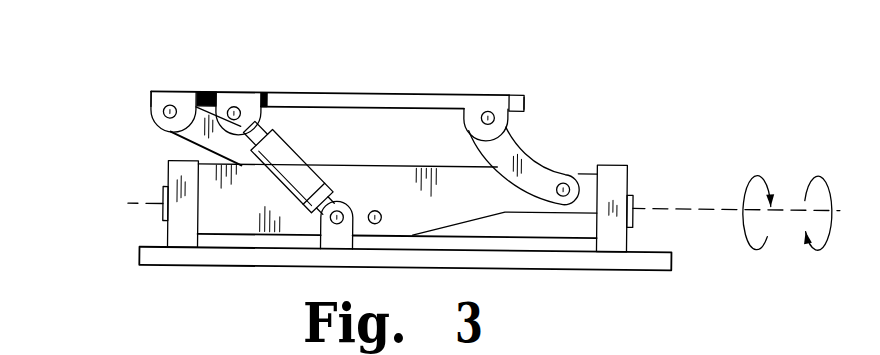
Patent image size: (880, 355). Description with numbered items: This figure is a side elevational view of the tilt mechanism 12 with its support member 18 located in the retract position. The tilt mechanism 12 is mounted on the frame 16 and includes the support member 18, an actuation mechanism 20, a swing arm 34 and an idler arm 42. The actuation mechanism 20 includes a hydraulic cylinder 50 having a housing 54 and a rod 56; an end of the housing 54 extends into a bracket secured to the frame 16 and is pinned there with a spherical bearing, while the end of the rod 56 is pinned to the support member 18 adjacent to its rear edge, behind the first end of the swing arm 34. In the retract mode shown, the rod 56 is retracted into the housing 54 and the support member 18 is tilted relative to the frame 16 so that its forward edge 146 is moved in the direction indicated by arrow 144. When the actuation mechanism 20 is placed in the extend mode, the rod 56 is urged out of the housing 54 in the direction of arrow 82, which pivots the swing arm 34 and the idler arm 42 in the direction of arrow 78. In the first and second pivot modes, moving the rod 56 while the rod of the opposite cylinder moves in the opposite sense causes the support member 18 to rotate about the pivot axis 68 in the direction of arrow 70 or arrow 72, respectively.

The tilt mechanism 12 is at (97, 105).
The frame 16 is at (614, 261).
The support member 18 is at (512, 101).
The actuation mechanism 20 is at (242, 218).
The swing arm 34 is at (532, 167).
The idler arm 42 is at (188, 138).
The hydraulic cylinder 50 is at (316, 156).
The housing 54 is at (300, 207).
The rod 56 is at (263, 94).
The pivot axis 68 is at (682, 207).
The arrow 70 is at (757, 172).
The arrow 72 is at (818, 172).
The arrow 78 is at (546, 114).
The arrow 82 is at (280, 118).
The arrow 144 is at (679, 57).
The forward edge 146 is at (529, 102).